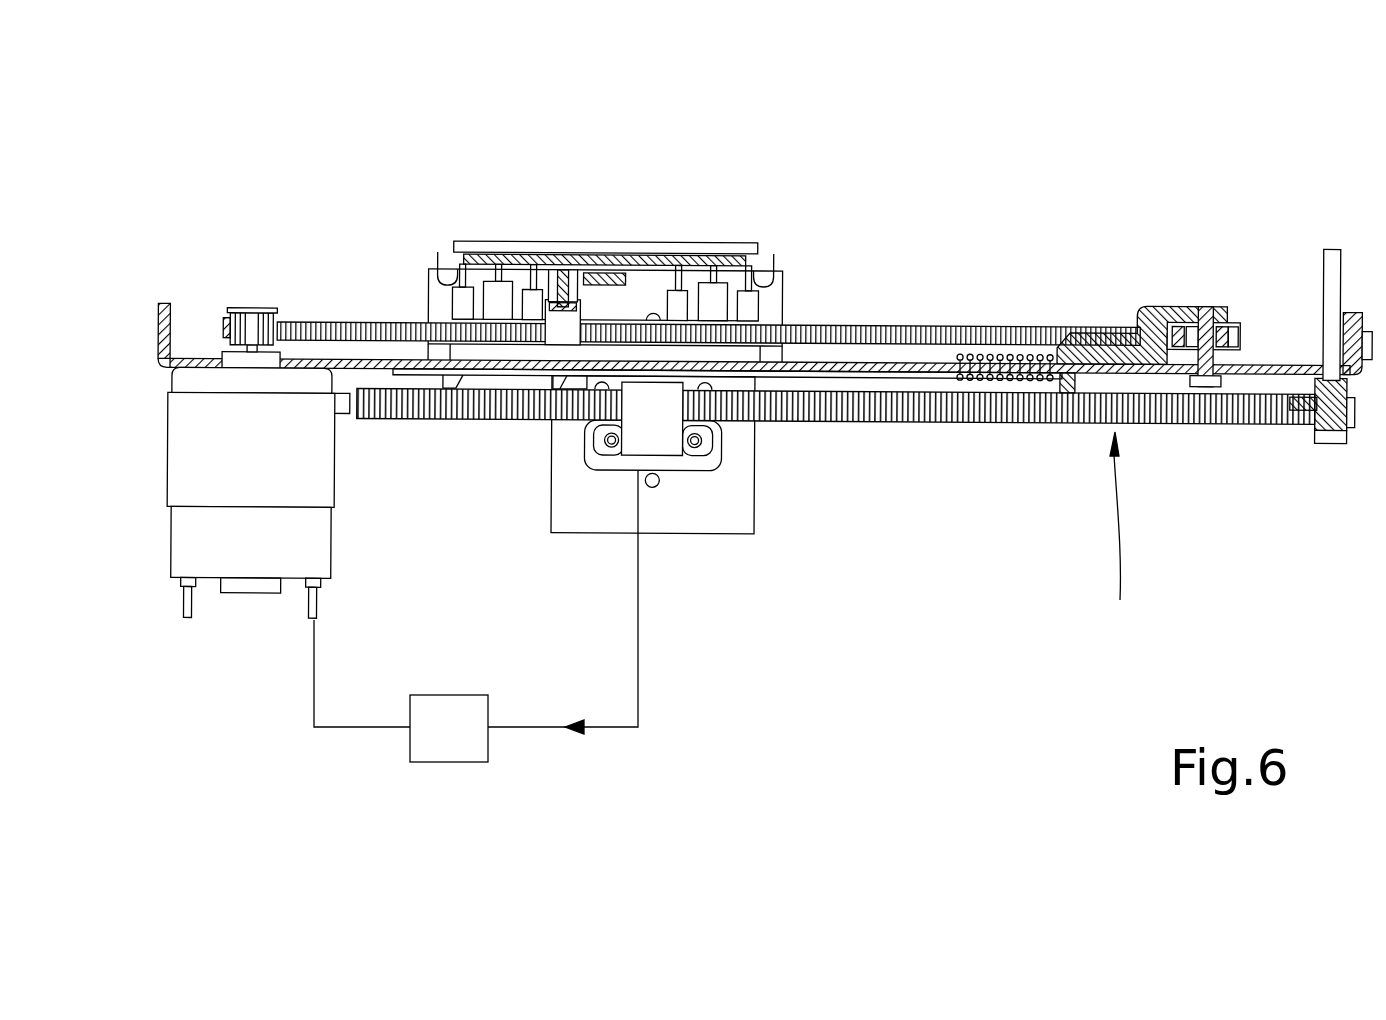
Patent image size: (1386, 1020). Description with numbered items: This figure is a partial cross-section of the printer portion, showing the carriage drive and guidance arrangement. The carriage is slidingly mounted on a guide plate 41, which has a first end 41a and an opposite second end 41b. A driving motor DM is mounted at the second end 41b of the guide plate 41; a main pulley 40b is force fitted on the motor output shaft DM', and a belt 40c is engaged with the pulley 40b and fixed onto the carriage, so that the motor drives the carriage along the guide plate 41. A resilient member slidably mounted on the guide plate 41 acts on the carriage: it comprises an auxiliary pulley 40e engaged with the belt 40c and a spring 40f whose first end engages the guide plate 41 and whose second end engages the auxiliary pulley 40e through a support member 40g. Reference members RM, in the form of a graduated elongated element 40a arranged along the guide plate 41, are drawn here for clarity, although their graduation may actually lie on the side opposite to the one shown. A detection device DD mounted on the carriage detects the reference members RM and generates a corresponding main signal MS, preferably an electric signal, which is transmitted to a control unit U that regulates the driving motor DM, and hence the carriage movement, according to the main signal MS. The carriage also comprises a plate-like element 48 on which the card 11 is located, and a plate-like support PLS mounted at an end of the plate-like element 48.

The card 11 is at (537, 244).
The plate-like element 48 is at (577, 270).
The guide plate 41 is at (378, 358).
The first end 41a is at (1288, 362).
The second end 41b is at (158, 328).
The graduated elongated element 40a is at (1192, 423).
The main pulley 40b is at (237, 310).
The belt 40c is at (353, 324).
The auxiliary pulley 40e is at (1238, 325).
The spring 40f is at (994, 352).
The support member 40g is at (1114, 350).
The driving motor DM is at (220, 529).
The motor output shaft DM' is at (243, 238).
The plate-like support PLS is at (755, 490).
The detection device DD is at (667, 445).
The reference members RM is at (1121, 534).
The main signal MS is at (563, 602).
The control unit U is at (464, 744).